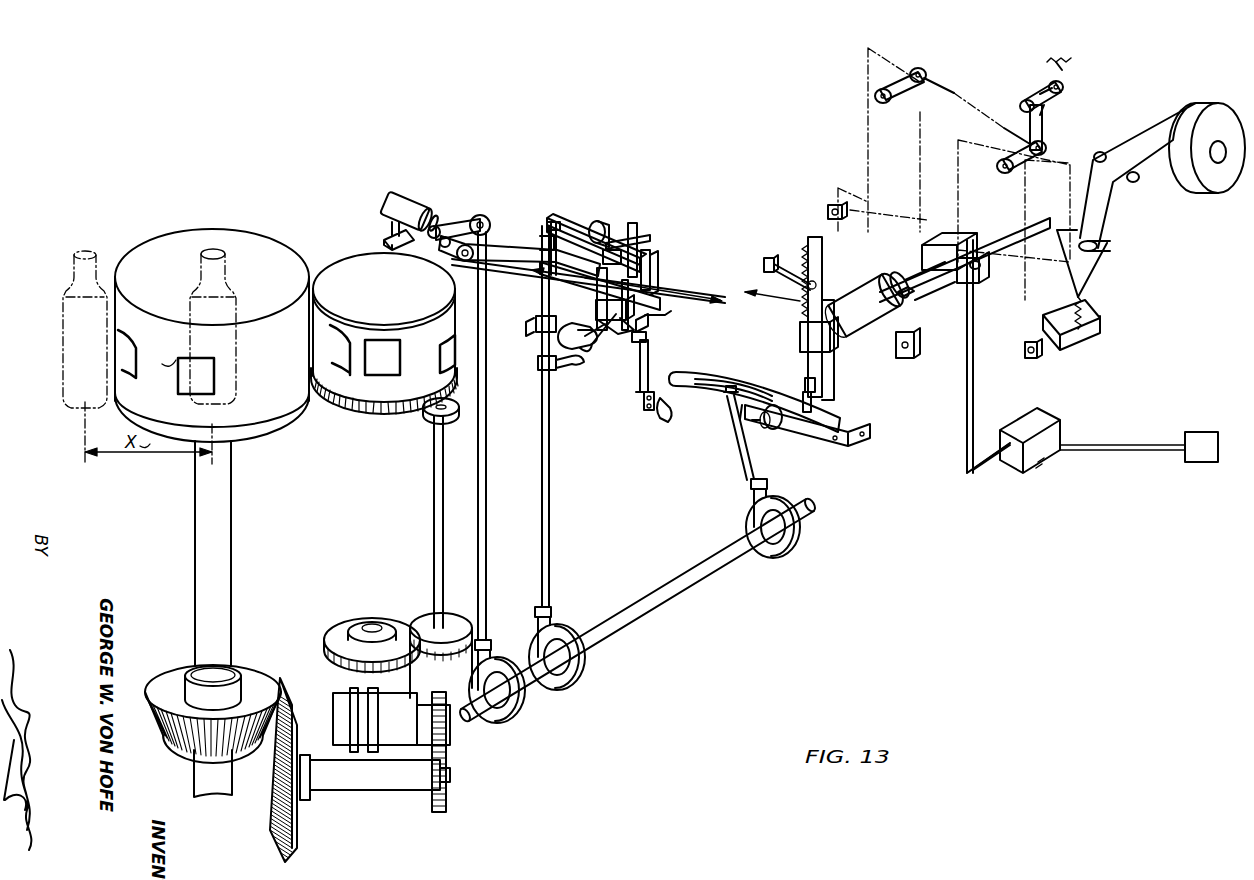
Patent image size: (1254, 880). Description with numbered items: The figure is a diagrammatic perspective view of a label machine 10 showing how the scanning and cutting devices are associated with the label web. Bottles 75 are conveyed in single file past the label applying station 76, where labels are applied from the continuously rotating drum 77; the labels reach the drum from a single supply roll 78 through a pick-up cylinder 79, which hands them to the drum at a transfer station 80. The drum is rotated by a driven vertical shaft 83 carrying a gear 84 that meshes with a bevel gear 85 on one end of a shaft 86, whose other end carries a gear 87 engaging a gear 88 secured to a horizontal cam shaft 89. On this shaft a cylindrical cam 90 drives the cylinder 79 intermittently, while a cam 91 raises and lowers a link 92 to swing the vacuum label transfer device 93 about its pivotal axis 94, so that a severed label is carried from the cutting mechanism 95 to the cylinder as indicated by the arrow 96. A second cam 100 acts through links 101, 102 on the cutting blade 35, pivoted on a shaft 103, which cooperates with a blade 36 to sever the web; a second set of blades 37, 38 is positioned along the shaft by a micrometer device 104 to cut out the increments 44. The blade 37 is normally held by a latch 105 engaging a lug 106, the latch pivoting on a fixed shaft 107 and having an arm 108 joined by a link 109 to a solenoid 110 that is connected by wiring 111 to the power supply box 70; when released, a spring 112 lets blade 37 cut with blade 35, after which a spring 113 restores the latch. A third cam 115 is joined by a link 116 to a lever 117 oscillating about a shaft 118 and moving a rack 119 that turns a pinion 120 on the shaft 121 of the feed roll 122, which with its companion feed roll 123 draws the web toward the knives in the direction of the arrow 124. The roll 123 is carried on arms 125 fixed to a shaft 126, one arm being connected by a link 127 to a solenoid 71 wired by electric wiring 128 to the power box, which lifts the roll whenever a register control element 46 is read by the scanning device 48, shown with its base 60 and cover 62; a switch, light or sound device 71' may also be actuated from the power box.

The machine frame 10 is at (949, 174).
The cutting blade 35 is at (644, 258).
The cutting blade 36 is at (586, 298).
The blade 37 is at (654, 276).
The blade 38 is at (642, 312).
The increments 44 is at (892, 276).
The register control element 46 is at (913, 300).
The scanning device 48 is at (940, 226).
The base 60 is at (976, 268).
The cover 62 is at (949, 240).
The power supply box 70 is at (1073, 425).
The solenoid 71 is at (1046, 54).
The switch, light or sound device 71' is at (1208, 435).
The bottles 75 is at (74, 304).
The label applying station 76 is at (223, 323).
The drum 77 is at (212, 335).
The roll 78 is at (1135, 230).
The cylinder 79 is at (384, 333).
The transfer station 80 is at (319, 266).
The vertical shaft 83 is at (213, 619).
The gear 84 is at (213, 714).
The bevel gear 85 is at (294, 817).
The shaft 86 is at (375, 777).
The gear 87 is at (443, 808).
The gear 88 is at (424, 682).
The cam shaft 89 is at (434, 705).
The cam 90 is at (340, 694).
The cam 91 is at (516, 728).
The link 92 is at (484, 492).
The vacuum label transfer device 93 is at (505, 293).
The pivotal axis 94 is at (424, 222).
The cutting mechanism 95 is at (588, 194).
The arrow 96 is at (468, 320).
The cam 100 is at (576, 692).
The link 101 is at (550, 492).
The link 102 is at (540, 318).
The shaft 103 is at (555, 244).
The micrometer device 104 is at (666, 332).
The latch 105 is at (598, 217).
The lug 106 is at (583, 222).
The shaft 107 is at (624, 374).
The arm 108 is at (608, 358).
The link 109 is at (648, 368).
The solenoid 110 is at (644, 410).
The wiring 111 is at (1042, 466).
The spring 112 is at (636, 232).
The spring 113 is at (644, 340).
The cam 115 is at (781, 562).
The link 116 is at (748, 456).
The lever 117 is at (740, 376).
The shaft 118 is at (767, 420).
The rack 119 is at (810, 246).
The pinion 120 is at (803, 293).
The shaft 121 is at (803, 270).
The feed roll 122 is at (862, 319).
The feed roll 123 is at (896, 318).
The arrow 124 is at (772, 306).
The arms 125 is at (874, 96).
The shaft 126 is at (945, 86).
The link 127 is at (1038, 82).
The electric wiring 128 is at (1053, 412).